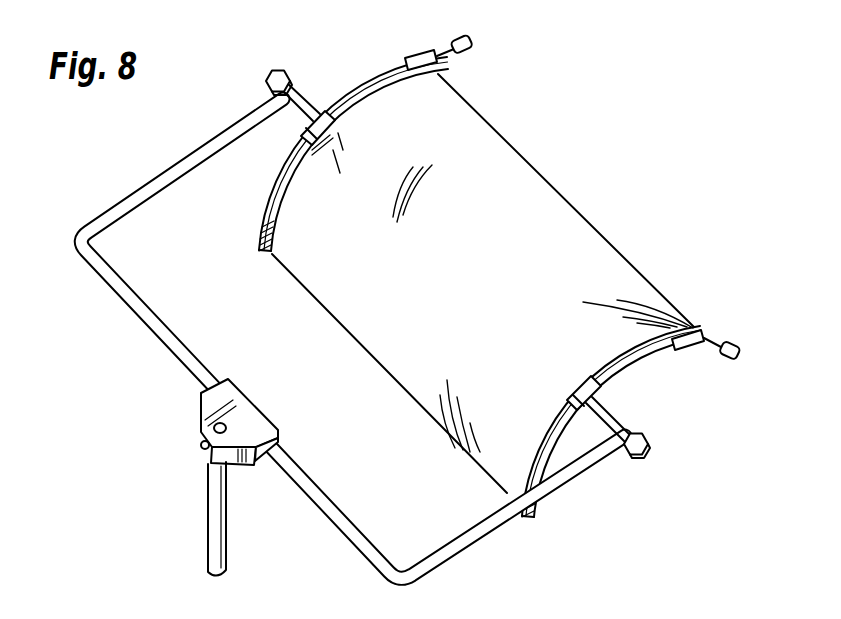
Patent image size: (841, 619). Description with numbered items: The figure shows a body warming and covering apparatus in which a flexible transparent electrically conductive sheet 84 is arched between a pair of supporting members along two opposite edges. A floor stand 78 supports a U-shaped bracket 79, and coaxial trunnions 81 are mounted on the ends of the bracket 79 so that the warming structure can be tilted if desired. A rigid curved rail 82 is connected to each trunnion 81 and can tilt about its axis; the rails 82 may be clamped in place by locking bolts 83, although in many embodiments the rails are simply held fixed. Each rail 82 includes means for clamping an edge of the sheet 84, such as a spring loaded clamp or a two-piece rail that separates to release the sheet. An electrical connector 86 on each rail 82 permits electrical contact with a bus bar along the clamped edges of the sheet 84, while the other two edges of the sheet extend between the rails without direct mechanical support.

The floor stand 78 is at (209, 531).
The U-shaped bracket 79 is at (113, 224).
The coaxial trunnions 81 is at (300, 92).
The rigid curved rail 82 is at (263, 253).
The locking bolts 83 is at (267, 76).
The flexible transparent electrically conductive sheet 84 is at (568, 198).
The electrical connector 86 is at (411, 58).